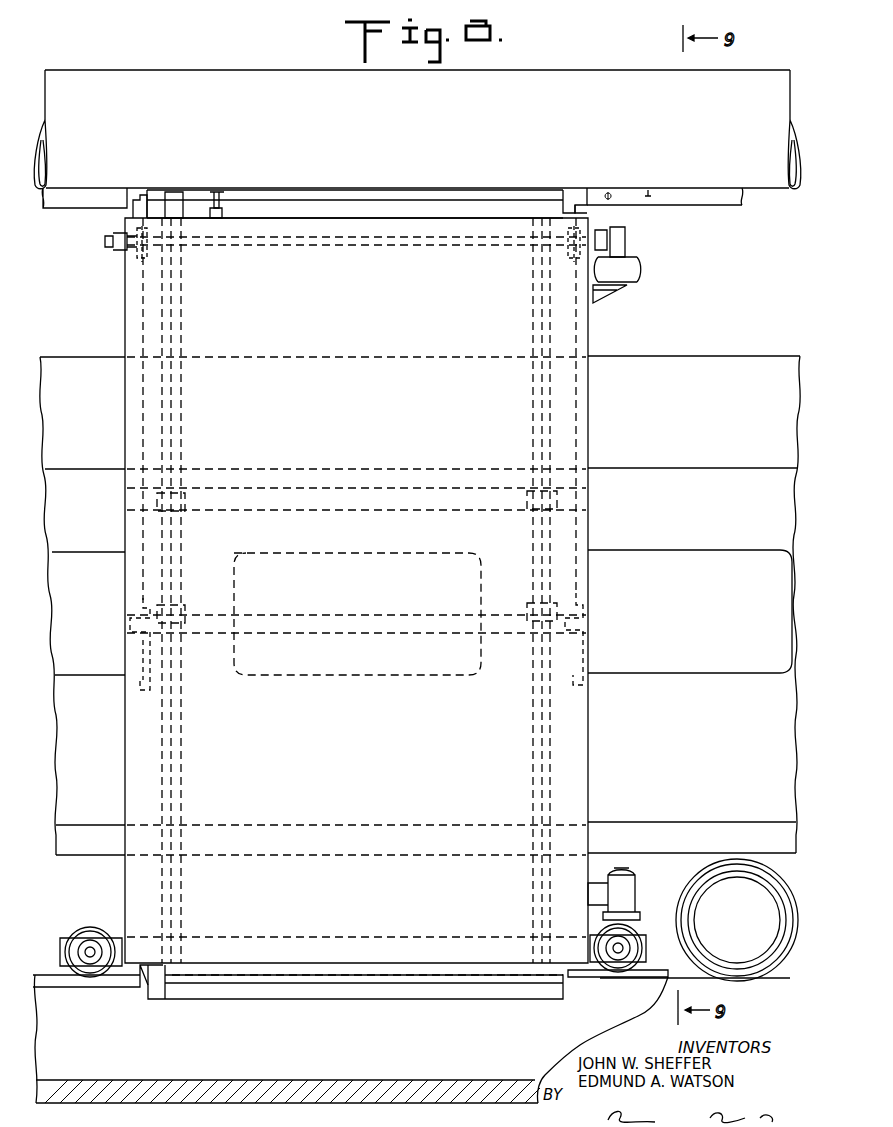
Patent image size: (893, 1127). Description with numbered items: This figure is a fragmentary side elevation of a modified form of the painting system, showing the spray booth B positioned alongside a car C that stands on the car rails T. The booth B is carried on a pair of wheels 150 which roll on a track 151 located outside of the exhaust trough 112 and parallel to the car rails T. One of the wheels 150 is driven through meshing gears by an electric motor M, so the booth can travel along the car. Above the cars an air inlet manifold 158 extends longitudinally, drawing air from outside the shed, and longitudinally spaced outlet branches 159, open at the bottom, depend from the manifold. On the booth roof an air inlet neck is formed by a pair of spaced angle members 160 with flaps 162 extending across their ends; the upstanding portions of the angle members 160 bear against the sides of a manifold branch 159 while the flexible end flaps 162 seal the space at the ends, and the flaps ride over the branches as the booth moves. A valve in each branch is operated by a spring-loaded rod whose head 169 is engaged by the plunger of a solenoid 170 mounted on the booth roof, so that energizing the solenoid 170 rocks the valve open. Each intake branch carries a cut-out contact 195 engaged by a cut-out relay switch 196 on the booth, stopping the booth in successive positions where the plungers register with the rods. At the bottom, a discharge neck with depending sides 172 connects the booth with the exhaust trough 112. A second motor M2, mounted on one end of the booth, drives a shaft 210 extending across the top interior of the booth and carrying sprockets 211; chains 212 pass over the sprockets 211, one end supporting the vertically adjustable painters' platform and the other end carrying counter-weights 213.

The air inlet manifold 158 is at (520, 88).
The outlet branches 159 is at (70, 200).
The angle members 160 is at (390, 208).
The flaps 162 is at (578, 200).
The head 169 is at (172, 192).
The solenoid 170 is at (182, 210).
The depending sides 172 is at (276, 970).
The cut-out contact 195 is at (212, 195).
The cut-out relay switch 196 is at (222, 212).
The drive shaft 210 is at (375, 240).
The sprockets 211 is at (133, 255).
The chains 212 is at (143, 305).
The counter-weights 213 is at (140, 643).
The wheels 150 is at (90, 928).
The track 151 is at (640, 977).
The exhaust trough 112 is at (390, 1059).
The spray booth B is at (378, 760).
The car C is at (682, 388).
The electric motor M is at (620, 897).
The motor M2 is at (622, 268).
The car rails T is at (770, 980).